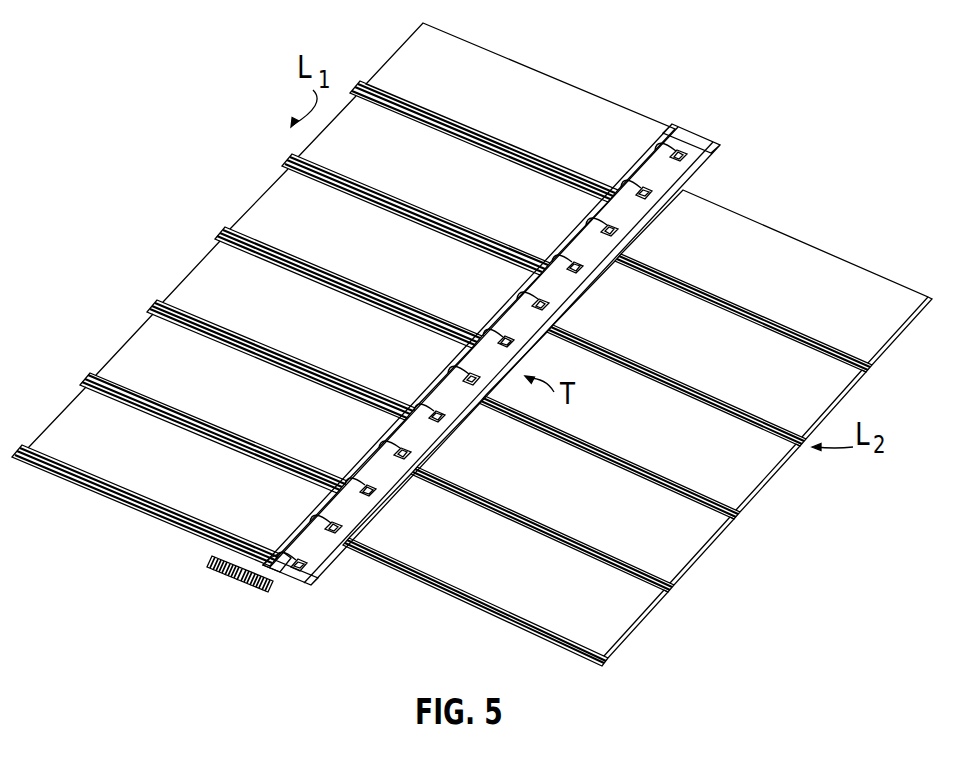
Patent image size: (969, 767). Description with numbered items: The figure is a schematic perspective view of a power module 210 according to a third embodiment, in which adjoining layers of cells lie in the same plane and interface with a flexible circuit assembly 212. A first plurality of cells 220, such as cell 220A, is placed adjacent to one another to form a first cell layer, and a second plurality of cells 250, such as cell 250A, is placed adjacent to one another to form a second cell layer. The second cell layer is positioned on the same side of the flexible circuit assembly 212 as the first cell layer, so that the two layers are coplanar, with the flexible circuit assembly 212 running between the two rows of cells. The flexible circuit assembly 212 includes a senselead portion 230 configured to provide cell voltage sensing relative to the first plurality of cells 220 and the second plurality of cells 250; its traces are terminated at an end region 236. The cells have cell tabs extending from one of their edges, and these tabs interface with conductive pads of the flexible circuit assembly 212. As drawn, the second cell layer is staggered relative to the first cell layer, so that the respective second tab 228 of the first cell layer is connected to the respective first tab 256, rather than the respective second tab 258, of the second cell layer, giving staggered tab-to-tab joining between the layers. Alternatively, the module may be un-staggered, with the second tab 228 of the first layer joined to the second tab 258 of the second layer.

The power module 210 is at (472, 365).
The flexible circuit assembly 212 is at (512, 373).
The first plurality of cells 220 is at (343, 294).
The cell 220A is at (229, 394).
The second tab 228 is at (642, 190).
The senselead portion 230 is at (260, 593).
The end region 236 is at (214, 570).
The second plurality of cells 250 is at (637, 448).
The cell 250A is at (516, 567).
The first tab 256 is at (683, 186).
The second tab 258 is at (624, 236).